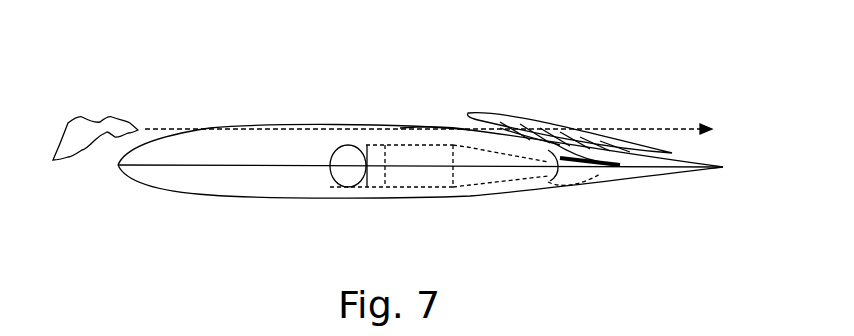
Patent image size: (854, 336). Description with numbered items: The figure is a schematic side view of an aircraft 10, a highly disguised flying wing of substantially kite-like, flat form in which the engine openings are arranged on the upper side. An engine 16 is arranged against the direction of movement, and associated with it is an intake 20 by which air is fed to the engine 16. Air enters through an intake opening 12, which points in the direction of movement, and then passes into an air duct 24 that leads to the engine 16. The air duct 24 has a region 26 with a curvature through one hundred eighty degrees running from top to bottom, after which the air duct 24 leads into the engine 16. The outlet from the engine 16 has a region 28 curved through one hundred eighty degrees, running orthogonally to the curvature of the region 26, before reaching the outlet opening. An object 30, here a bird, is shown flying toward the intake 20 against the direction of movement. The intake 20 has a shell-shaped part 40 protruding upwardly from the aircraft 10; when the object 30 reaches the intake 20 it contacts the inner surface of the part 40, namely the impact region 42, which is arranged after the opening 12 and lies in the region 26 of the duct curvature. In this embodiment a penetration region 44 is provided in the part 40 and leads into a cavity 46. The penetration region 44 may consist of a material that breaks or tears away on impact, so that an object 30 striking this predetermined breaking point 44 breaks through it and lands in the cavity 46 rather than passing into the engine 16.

The aircraft 10 is at (594, 70).
The intake opening 12 is at (467, 130).
The engine 16 is at (418, 175).
The intake 20 is at (492, 88).
The air duct 24 is at (505, 184).
The curved region 26 is at (545, 170).
The curved region of outlet 28 is at (336, 178).
The object 30 is at (108, 120).
The shell-shaped part 40 is at (593, 135).
The impact region 42 is at (522, 128).
The penetration region 44 is at (589, 131).
The cavity 46 is at (566, 128).